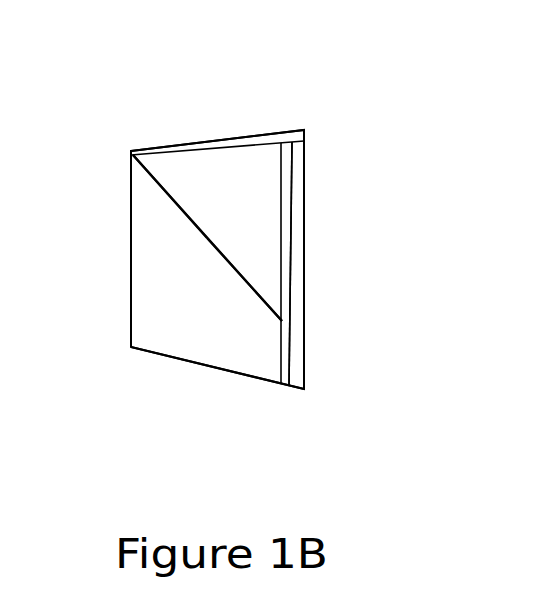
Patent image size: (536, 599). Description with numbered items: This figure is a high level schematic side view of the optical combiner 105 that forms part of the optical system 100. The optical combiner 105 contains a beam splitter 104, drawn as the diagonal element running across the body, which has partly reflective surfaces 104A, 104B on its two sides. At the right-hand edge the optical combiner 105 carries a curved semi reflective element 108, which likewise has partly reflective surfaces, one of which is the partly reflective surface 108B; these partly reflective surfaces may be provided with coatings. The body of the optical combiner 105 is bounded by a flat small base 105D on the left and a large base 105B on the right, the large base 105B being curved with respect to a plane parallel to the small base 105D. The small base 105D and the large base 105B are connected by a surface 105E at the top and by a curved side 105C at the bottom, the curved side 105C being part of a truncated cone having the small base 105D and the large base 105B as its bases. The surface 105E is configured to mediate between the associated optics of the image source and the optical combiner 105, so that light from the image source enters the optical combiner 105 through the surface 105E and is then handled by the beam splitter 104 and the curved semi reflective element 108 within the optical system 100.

The optical system 100 is at (116, 45).
The beam splitter 104 is at (214, 234).
The partly reflective surface 104A is at (190, 213).
The partly reflective surface 104B is at (248, 283).
The optical combiner 105 is at (150, 355).
The large base 105B is at (287, 265).
The curved side 105C is at (178, 358).
The small base 105D is at (130, 251).
The surface 105E is at (202, 142).
The curved semi reflective element 108 is at (293, 323).
The partly reflective surface 108B is at (288, 238).